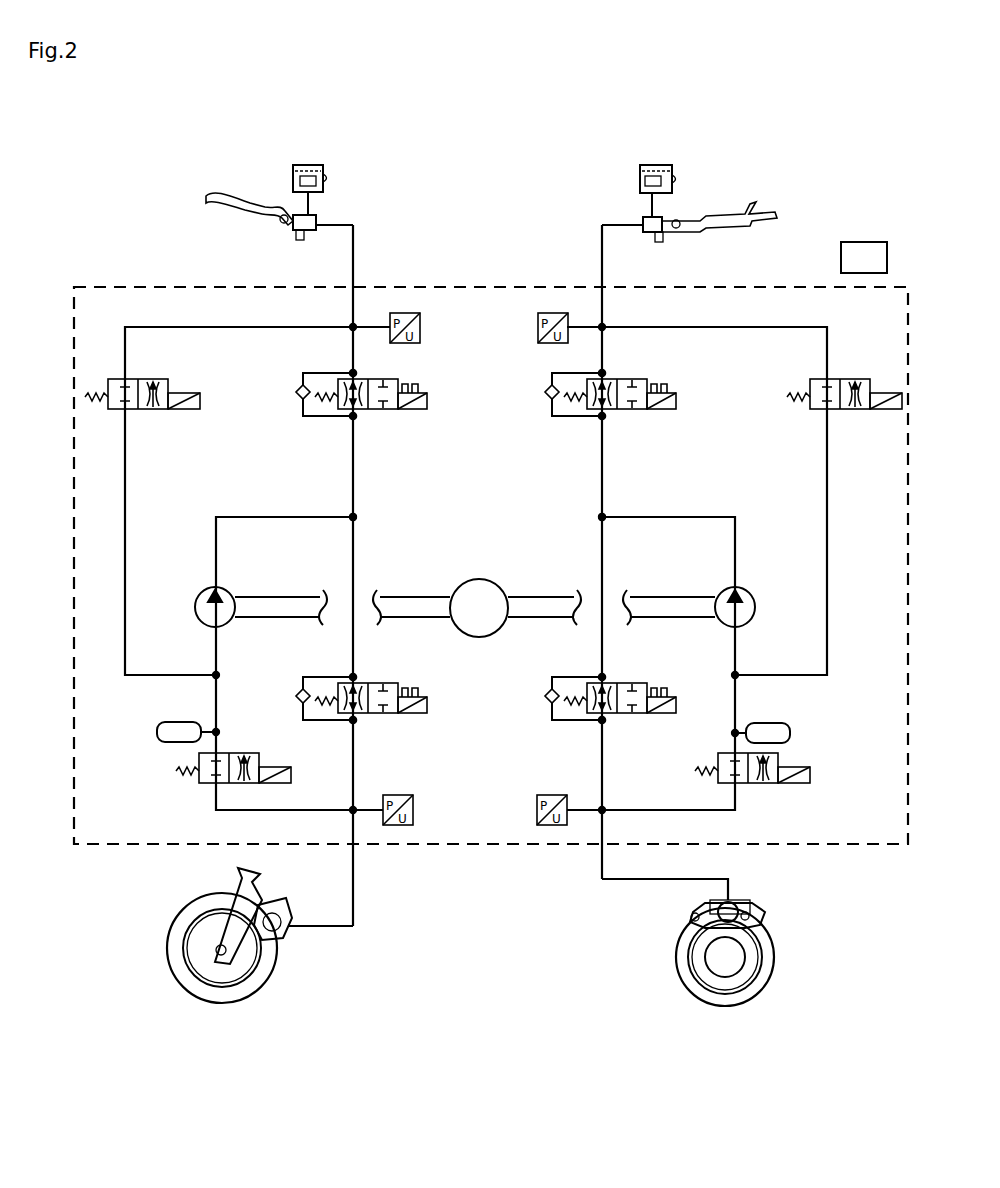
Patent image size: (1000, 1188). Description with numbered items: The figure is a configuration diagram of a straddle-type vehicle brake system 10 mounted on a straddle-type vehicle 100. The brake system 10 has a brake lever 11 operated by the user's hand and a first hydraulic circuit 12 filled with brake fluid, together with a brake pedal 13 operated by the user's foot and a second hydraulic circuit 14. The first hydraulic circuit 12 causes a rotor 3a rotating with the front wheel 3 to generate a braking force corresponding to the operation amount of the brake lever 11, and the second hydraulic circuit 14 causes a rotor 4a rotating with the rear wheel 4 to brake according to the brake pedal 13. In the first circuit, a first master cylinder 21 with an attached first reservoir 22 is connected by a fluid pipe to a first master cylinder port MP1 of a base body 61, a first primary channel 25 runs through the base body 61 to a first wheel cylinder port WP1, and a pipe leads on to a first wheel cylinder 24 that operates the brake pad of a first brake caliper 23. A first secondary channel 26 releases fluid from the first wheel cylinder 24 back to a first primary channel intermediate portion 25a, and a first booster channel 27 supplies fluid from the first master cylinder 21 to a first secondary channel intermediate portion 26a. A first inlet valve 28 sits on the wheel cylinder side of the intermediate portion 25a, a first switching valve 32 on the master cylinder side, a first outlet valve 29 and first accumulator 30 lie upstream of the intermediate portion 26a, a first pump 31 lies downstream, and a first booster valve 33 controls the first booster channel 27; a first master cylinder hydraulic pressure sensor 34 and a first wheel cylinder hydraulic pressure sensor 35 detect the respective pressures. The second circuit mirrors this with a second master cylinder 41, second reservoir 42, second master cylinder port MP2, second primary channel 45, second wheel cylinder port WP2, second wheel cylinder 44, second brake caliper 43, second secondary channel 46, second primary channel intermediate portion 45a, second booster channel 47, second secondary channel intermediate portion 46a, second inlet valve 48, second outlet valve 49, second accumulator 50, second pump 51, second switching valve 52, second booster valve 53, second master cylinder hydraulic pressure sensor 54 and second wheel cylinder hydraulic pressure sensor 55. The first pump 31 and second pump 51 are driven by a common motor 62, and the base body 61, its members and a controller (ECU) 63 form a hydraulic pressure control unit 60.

The straddle-type vehicle 100 is at (876, 110).
The straddle-type vehicle brake system 10 is at (128, 188).
The brake lever 11 is at (224, 205).
The first hydraulic circuit 12 is at (398, 152).
The brake pedal 13 is at (748, 206).
The second hydraulic circuit 14 is at (540, 152).
The first master cylinder 21 is at (305, 232).
The first reservoir 22 is at (315, 165).
The first brake caliper 23 is at (270, 905).
The first wheel cylinder 24 is at (290, 916).
The first primary channel 25 is at (353, 475).
The first primary channel intermediate portion 25a is at (353, 517).
The first secondary channel 26 is at (252, 517).
The first secondary channel intermediate portion 26a is at (216, 675).
The first booster channel 27 is at (225, 327).
The first inlet valve 28 is at (383, 713).
The first outlet valve 29 is at (250, 753).
The first accumulator 30 is at (178, 722).
The first pump 31 is at (228, 626).
The first switching valve 32 is at (405, 409).
The first booster valve 33 is at (170, 409).
The first master cylinder hydraulic pressure sensor 34 is at (420, 327).
The first wheel cylinder hydraulic pressure sensor 35 is at (413, 808).
The front wheel 3 is at (282, 980).
The rotor 3a is at (185, 978).
The rear wheel 4 is at (670, 990).
The rotor 4a is at (757, 988).
The second master cylinder 41 is at (650, 232).
The second reservoir 42 is at (656, 165).
The second brake caliper 43 is at (690, 920).
The second wheel cylinder 44 is at (752, 906).
The second primary channel 45 is at (602, 475).
The second primary channel intermediate portion 45a is at (602, 517).
The second secondary channel 46 is at (670, 517).
The second secondary channel intermediate portion 46a is at (735, 675).
The second booster channel 47 is at (748, 327).
The second inlet valve 48 is at (632, 713).
The second outlet valve 49 is at (770, 783).
The second accumulator 50 is at (776, 723).
The second pump 51 is at (723, 626).
The second switching valve 52 is at (672, 409).
The second booster valve 53 is at (842, 409).
The second master cylinder hydraulic pressure sensor 54 is at (538, 327).
The second wheel cylinder hydraulic pressure sensor 55 is at (537, 808).
The hydraulic pressure control unit 60 is at (828, 222).
The base body 61 is at (118, 287).
The motor 62 is at (484, 638).
The controller (ECU) 63 is at (870, 242).
The first master cylinder port MP1 is at (353, 287).
The second master cylinder port MP2 is at (602, 287).
The first wheel cylinder port WP1 is at (353, 848).
The second wheel cylinder port WP2 is at (602, 848).